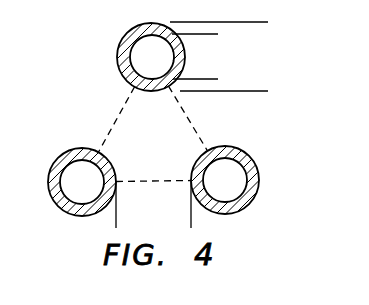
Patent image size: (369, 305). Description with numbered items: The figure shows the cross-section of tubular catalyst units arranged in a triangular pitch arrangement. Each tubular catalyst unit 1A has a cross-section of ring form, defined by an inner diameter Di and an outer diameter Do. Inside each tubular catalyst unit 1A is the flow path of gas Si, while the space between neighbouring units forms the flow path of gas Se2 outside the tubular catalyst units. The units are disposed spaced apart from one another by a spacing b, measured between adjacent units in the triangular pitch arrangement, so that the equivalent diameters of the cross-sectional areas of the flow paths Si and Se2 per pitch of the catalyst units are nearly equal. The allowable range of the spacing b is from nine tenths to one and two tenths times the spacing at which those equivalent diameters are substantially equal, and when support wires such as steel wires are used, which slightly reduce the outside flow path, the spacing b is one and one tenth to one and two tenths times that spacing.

The tubular catalyst unit 1A is at (125, 45).
The flow path of gas inside the tubular catalyst unit Si is at (143, 55).
The flow path of gas outside the tubular catalyst unit Se2 is at (140, 129).
The inner diameter of the tubular catalyst unit Di is at (209, 34).
The outer diameter of the tubular catalyst unit Do is at (255, 22).
The spacing of the tubular catalyst units in the triangular pitch arrangement b is at (191, 220).